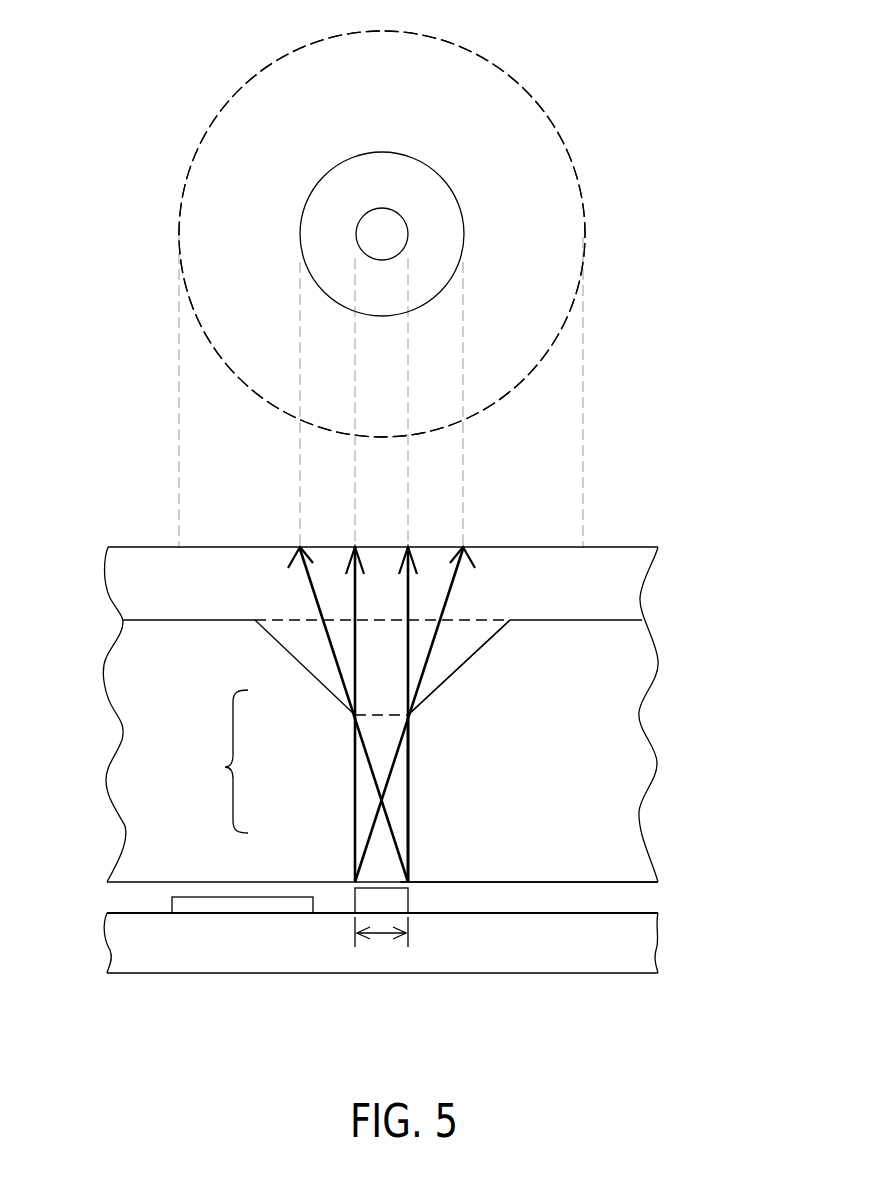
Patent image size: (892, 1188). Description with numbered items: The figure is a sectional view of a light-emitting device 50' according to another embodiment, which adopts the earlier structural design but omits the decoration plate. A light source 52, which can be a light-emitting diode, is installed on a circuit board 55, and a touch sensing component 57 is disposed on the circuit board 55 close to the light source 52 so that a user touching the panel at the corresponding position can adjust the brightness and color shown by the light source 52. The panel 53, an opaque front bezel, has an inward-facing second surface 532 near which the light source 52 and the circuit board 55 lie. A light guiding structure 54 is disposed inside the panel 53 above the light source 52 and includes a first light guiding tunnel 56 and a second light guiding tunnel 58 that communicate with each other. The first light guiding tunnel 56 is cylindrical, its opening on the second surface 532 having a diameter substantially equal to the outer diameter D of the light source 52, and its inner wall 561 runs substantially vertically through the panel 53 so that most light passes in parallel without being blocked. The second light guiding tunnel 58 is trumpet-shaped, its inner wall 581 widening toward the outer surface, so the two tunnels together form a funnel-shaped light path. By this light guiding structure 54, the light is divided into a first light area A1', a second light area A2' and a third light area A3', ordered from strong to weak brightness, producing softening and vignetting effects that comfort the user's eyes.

The light-emitting device 50' is at (438, 289).
The first light area A1' is at (382, 234).
The second light area A2' is at (382, 234).
The third light area A3' is at (382, 234).
The panel 53 is at (654, 672).
The second surface 532 is at (580, 882).
The light guiding structure 54 is at (224, 768).
The first light guiding tunnel 56 is at (358, 793).
The inner wall 561 is at (413, 800).
The second light guiding tunnel 58 is at (308, 662).
The inner wall 581 is at (463, 665).
The light source 52 is at (410, 903).
The touch sensing component 57 is at (240, 905).
The circuit board 55 is at (545, 955).
The outer diameter D is at (381, 946).